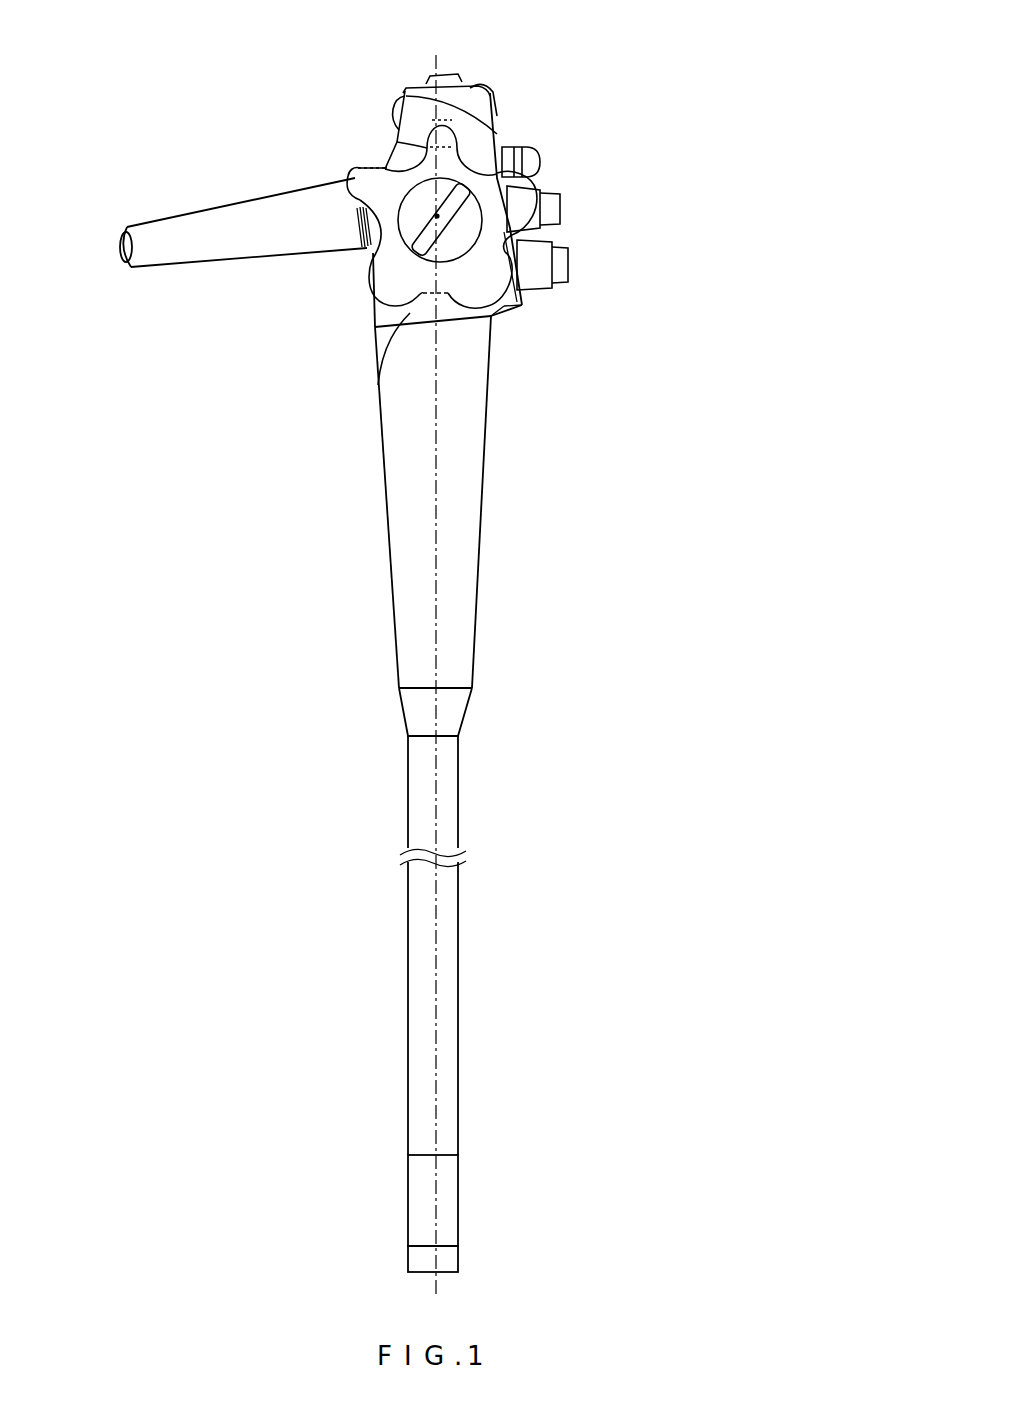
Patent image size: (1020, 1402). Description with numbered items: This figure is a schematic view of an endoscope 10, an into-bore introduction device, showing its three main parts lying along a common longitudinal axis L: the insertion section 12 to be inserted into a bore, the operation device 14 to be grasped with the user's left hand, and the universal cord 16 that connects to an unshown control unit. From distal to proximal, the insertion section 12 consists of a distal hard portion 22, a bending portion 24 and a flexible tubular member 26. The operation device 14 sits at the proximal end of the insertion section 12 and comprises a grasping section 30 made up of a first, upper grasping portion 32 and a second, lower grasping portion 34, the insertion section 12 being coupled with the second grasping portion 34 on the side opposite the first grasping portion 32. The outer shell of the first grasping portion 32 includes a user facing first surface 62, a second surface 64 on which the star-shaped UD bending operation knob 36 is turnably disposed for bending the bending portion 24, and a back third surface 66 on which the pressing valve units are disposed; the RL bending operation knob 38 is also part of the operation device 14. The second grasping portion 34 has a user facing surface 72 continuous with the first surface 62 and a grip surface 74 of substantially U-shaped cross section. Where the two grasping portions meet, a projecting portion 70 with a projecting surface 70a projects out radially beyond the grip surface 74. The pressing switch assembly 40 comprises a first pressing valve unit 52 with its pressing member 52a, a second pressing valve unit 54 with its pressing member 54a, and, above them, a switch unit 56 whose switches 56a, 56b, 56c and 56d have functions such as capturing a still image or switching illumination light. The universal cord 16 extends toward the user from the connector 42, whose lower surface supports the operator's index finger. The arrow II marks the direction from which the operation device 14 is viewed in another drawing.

The endoscope 10 is at (318, 598).
The insertion section 12 is at (508, 948).
The operation device 14 is at (603, 405).
The universal cord 16 is at (166, 218).
The distal hard portion 22 is at (450, 1262).
The bending portion 24 is at (458, 1204).
The tubular member 26 is at (458, 1040).
The grasping section 30 is at (356, 354).
The first grasping portion 32 is at (380, 320).
The second grasping portion 34 is at (470, 518).
The UD bending operation knob 36 is at (360, 170).
The RL bending operation knob 38 is at (368, 258).
The pressing switch assembly 40 is at (583, 231).
The connector 42 is at (397, 147).
The first pressing valve unit 52 is at (578, 280).
The pressing member 52a is at (570, 262).
The second pressing valve unit 54 is at (568, 184).
The pressing member 54a is at (562, 212).
The switch unit 56 is at (582, 84).
The switch 56a is at (540, 150).
The switch 56b is at (497, 95).
The switch 56c is at (447, 76).
The switch 56d is at (407, 92).
The first surface 62 is at (373, 309).
The second surface 64 is at (377, 385).
The third surface 66 is at (520, 304).
The projecting portion 70 is at (515, 308).
The projecting surface 70a is at (508, 320).
The user facing surface 72 is at (386, 492).
The grip surface 74 is at (484, 463).
The longitudinal axis L is at (436, 1118).
The viewing direction II is at (683, 271).